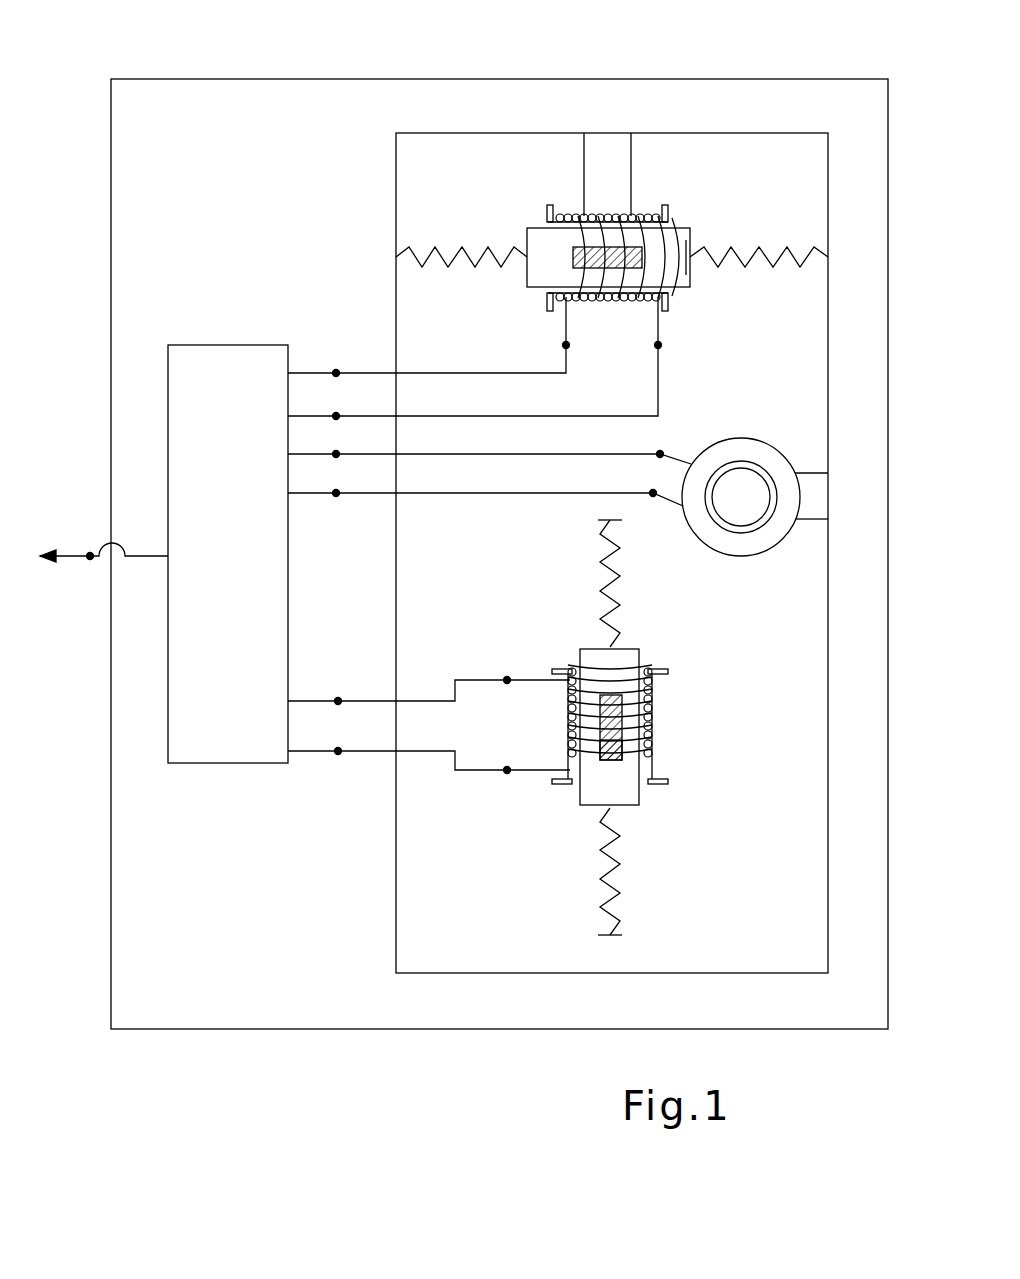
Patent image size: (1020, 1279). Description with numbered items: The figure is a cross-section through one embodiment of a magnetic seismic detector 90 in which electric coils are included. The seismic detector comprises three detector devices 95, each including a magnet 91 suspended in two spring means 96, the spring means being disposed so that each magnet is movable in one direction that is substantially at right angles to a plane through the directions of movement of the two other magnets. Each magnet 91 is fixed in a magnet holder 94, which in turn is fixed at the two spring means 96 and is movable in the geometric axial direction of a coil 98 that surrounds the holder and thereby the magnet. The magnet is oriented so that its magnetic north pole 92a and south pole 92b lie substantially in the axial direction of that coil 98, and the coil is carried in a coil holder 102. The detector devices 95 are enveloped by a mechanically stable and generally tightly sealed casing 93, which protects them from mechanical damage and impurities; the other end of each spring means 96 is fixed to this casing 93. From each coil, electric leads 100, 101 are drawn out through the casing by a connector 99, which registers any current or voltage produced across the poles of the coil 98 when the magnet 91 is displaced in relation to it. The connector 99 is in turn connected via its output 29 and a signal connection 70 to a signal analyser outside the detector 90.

The seismic detector 90 is at (433, 79).
The casing 93 is at (396, 177).
The connector 99 is at (205, 763).
The signal connection 70 is at (72, 555).
The output 29 is at (90, 557).
The detector device 95 is at (530, 300).
The magnet 91 is at (690, 227).
The magnetic north pole 92a is at (572, 258).
The south pole 92b is at (613, 762).
The coil 98 is at (651, 214).
The magnet holder 94 is at (686, 287).
The spring means 96 is at (437, 250).
The coil holder 102 is at (604, 173).
The wire 100 is at (489, 501).
The wire 101 is at (485, 542).